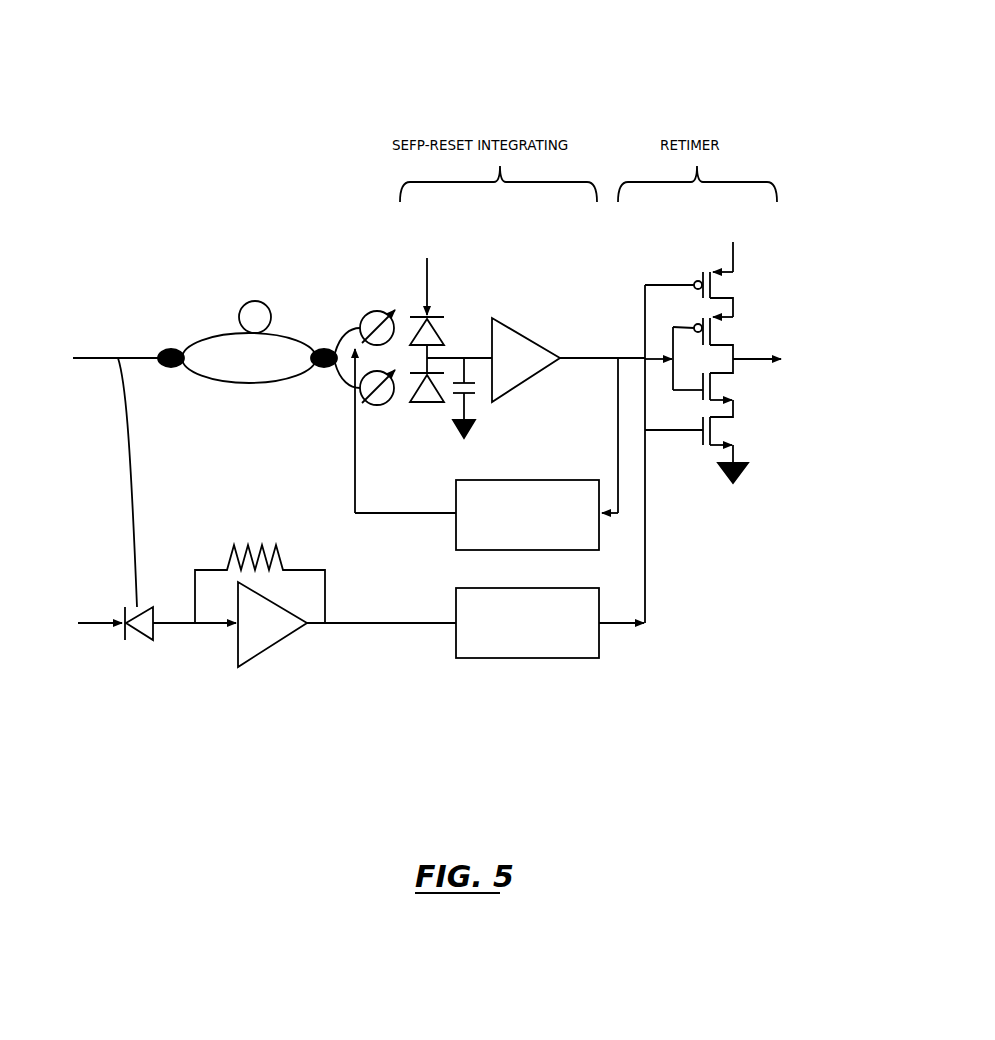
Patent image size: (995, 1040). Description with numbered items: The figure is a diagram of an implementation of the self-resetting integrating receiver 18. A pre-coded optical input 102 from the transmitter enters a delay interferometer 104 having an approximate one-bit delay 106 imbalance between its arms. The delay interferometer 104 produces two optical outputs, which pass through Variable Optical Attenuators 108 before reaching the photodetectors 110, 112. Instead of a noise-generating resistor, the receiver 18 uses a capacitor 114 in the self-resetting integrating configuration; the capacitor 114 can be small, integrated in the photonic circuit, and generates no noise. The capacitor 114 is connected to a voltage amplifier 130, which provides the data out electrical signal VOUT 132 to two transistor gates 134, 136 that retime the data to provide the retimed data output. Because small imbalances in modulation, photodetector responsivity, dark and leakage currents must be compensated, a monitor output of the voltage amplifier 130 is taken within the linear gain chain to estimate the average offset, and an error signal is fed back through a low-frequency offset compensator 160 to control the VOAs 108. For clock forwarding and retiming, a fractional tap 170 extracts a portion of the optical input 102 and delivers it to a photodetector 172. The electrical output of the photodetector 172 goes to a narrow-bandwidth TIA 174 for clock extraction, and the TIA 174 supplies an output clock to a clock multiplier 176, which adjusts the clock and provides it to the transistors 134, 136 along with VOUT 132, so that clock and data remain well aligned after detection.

The receiver 18 is at (480, 55).
The pre-coded optical input 102 is at (86, 299).
The delay interferometer 104 is at (243, 383).
The one-bit delay 106 is at (270, 327).
The Variable Optical Attenuators 108 is at (379, 300).
The photodetector 110 is at (437, 315).
The photodetector 112 is at (410, 403).
The capacitor 114 is at (455, 405).
The voltage amplifier 130 is at (510, 324).
The data out electrical signal VOUT 132 is at (584, 316).
The transistor gate 134 is at (748, 295).
The transistor gate 136 is at (751, 404).
The low-frequency offset compensator 160 is at (496, 480).
The fractional tap 170 is at (127, 387).
The photodetector 172 is at (127, 630).
The narrow-bandwidth TIA 174 is at (256, 523).
The clock multiplier 176 is at (455, 648).